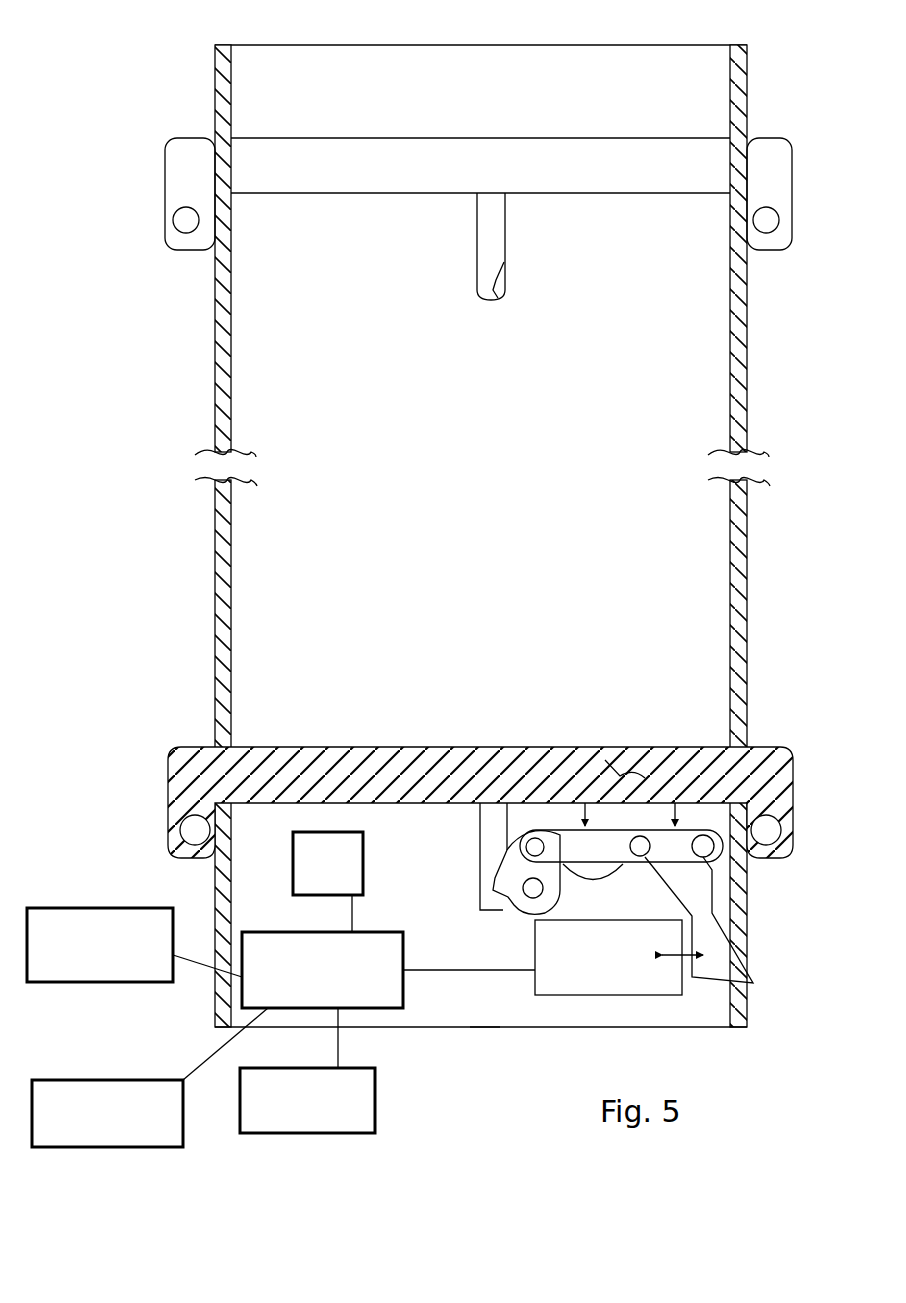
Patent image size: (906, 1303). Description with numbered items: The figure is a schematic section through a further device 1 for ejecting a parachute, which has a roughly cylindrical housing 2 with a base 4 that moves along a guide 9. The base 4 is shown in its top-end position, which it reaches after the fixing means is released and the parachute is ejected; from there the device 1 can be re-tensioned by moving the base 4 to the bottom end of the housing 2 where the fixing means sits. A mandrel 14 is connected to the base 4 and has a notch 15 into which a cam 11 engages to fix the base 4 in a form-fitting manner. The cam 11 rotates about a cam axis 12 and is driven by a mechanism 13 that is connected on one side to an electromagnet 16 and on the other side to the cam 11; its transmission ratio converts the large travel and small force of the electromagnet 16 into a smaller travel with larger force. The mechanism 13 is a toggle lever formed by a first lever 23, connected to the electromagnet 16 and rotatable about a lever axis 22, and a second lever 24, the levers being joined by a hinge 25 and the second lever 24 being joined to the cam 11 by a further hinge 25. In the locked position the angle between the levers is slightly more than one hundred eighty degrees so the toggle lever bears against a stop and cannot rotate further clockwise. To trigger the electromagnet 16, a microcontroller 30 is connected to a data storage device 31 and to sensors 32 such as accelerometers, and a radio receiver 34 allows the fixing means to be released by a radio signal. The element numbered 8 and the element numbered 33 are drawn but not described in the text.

The device 1 is at (193, 96).
The housing 2 is at (215, 590).
The base 4 is at (460, 192).
The housing bottom 8 is at (537, 1043).
The guide 9 is at (605, 745).
The cam 11 is at (528, 906).
The cam axis 12 is at (503, 906).
The mechanism 13 is at (487, 1012).
The mandrel 14 is at (490, 233).
The notch 15 is at (500, 272).
The electromagnet 16 is at (619, 957).
The lever axis 22 is at (710, 857).
The first lever 23 is at (699, 920).
The second lever 24 is at (621, 832).
The hinge 25 is at (546, 853).
The microcontroller 30 is at (293, 952).
The data storage device 31 is at (62, 1090).
The sensors 32 is at (259, 1121).
The energy storage 33 is at (297, 857).
The radio receiver 34 is at (78, 935).